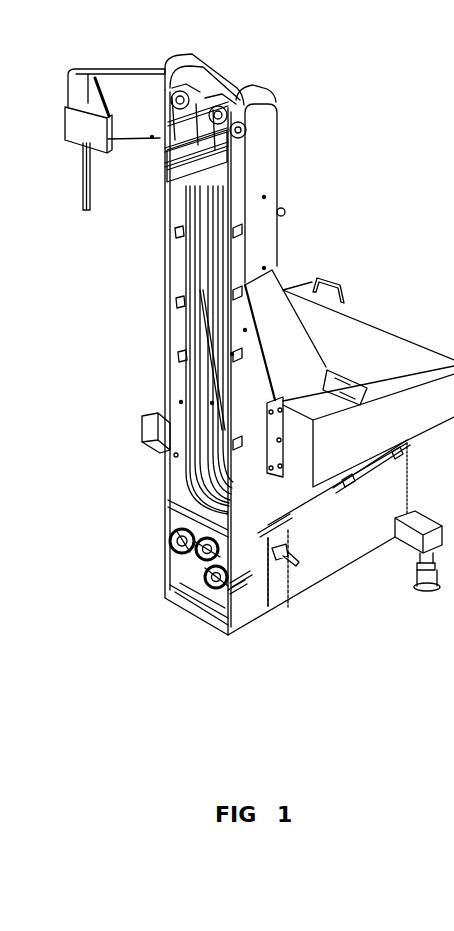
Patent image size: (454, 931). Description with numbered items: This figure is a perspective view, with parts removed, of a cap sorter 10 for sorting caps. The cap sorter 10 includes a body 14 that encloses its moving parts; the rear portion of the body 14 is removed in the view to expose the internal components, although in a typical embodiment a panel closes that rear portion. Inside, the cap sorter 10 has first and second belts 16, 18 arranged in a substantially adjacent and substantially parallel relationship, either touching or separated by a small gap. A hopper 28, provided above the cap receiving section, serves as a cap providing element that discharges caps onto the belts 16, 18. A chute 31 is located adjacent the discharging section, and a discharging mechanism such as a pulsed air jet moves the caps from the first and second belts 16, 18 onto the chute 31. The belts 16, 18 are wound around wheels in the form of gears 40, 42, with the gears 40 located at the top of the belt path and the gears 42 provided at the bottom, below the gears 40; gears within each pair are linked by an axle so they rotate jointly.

The cap sorter 10 is at (131, 306).
The body 14 is at (294, 287).
The first belt 16 is at (180, 457).
The second belt 18 is at (187, 405).
The hopper 28 is at (367, 343).
The chute 31 is at (88, 97).
The gears 40 is at (191, 82).
The gears 42 is at (192, 594).